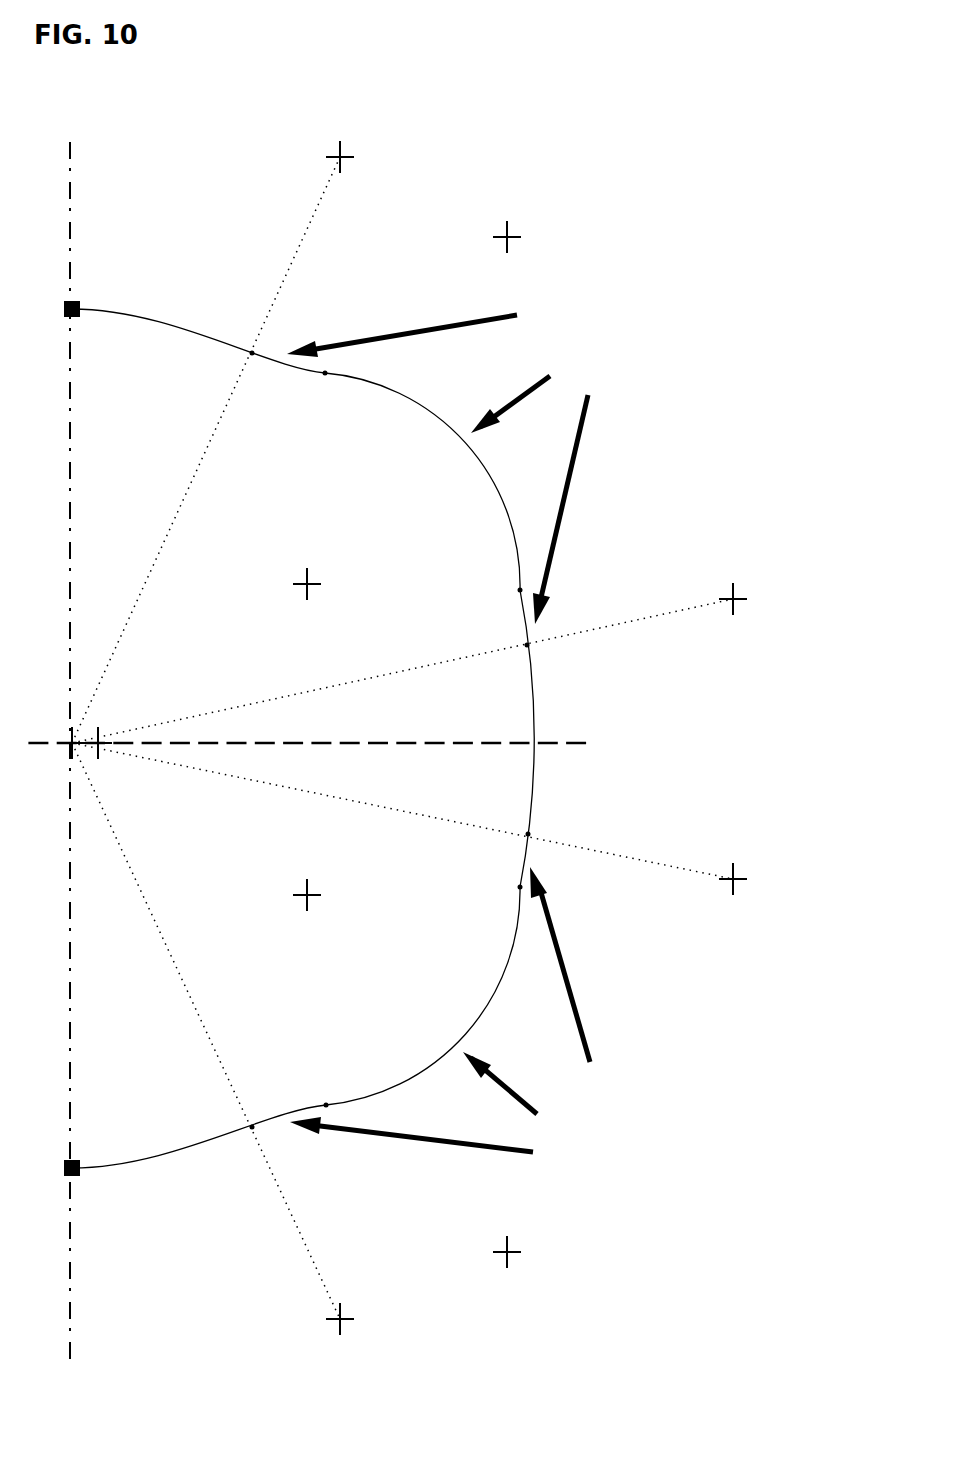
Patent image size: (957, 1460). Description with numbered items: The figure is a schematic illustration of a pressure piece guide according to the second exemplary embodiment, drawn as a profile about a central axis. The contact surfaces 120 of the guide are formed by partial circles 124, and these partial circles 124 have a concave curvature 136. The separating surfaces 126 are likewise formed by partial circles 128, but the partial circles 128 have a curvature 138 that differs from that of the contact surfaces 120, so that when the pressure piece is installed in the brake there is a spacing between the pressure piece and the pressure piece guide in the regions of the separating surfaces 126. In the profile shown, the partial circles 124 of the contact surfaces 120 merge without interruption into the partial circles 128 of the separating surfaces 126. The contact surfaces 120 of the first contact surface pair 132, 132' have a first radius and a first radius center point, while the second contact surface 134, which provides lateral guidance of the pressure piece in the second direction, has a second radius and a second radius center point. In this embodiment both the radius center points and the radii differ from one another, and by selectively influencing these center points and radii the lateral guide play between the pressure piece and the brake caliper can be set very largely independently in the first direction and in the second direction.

The contact surfaces 120 is at (193, 318).
The partial circles 124 is at (167, 368).
The separating surfaces 126 is at (489, 463).
The partial circles 128 is at (440, 478).
The first contact surface pair 132 is at (92, 717).
The first contact surface pair 132' is at (168, 1233).
The second contact surface 134 is at (597, 764).
The concave curvature 136 is at (236, 288).
The curvature 138 is at (464, 387).